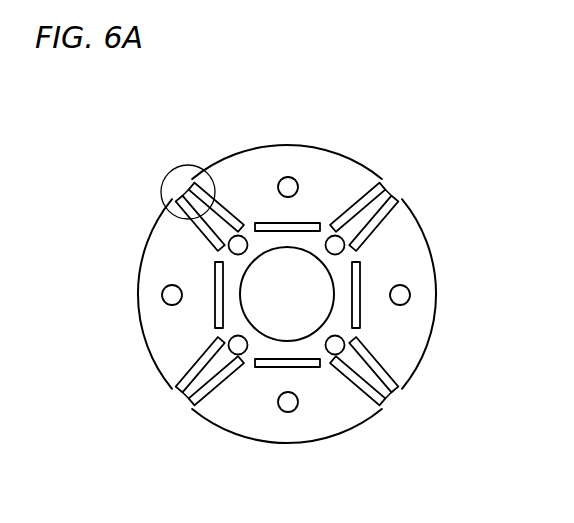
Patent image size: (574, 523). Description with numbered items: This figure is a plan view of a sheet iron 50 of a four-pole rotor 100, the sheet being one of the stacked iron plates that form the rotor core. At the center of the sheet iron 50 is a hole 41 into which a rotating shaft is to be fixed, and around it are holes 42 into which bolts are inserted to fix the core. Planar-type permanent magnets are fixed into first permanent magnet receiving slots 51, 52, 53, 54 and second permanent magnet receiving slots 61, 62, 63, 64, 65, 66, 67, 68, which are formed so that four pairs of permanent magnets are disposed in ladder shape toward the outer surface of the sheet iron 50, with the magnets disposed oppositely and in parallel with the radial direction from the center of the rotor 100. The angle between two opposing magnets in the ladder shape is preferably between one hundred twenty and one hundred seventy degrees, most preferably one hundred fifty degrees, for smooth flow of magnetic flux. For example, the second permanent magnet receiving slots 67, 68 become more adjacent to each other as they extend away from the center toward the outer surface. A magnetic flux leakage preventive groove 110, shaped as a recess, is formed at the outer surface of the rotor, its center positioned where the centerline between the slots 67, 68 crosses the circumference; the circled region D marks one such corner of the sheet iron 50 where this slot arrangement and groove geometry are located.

The rotor 100 is at (276, 266).
The magnetic flux leakage preventive groove 110 is at (388, 392).
The hole 41 is at (321, 278).
The holes 42 is at (288, 176).
The sheet iron 50 is at (146, 293).
The first permanent magnet receiving slot 51 is at (287, 213).
The first permanent magnet receiving slot 52 is at (374, 295).
The first permanent magnet receiving slot 53 is at (287, 375).
The first permanent magnet receiving slot 54 is at (204, 295).
The second permanent magnet receiving slot 61 is at (352, 206).
The second permanent magnet receiving slot 62 is at (379, 225).
The second permanent magnet receiving slot 63 is at (380, 362).
The second permanent magnet receiving slot 64 is at (357, 385).
The second permanent magnet receiving slot 65 is at (222, 382).
The second permanent magnet receiving slot 66 is at (196, 362).
The second permanent magnet receiving slot 67 is at (196, 226).
The second permanent magnet receiving slot 68 is at (221, 206).
The detail region D is at (162, 192).